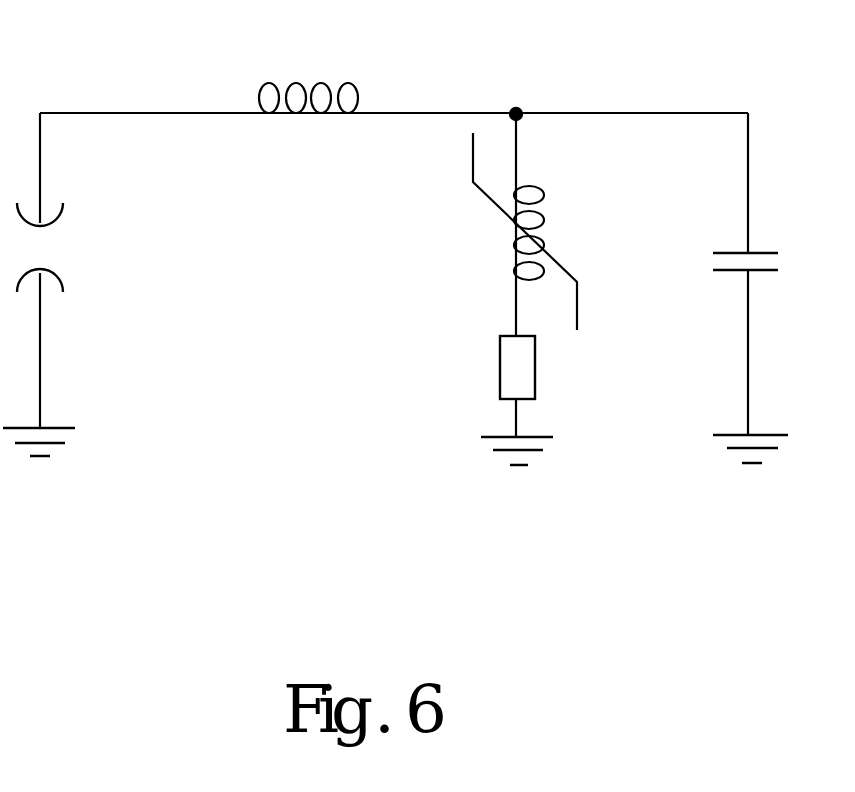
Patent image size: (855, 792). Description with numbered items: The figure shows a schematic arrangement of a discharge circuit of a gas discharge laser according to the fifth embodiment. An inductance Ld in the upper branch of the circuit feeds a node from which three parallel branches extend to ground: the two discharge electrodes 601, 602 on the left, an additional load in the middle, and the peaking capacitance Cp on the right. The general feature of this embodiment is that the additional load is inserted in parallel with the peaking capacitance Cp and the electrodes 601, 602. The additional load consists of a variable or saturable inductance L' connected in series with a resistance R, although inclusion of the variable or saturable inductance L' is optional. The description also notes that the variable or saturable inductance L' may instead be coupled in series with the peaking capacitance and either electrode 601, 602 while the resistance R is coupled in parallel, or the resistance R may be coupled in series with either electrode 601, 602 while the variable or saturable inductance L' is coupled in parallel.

The electrode 601 is at (76, 212).
The electrode 602 is at (74, 348).
The inductance Ld is at (309, 70).
The variable or saturable inductance L' is at (534, 231).
The resistance R is at (536, 367).
The peaking capacitance Cp is at (770, 272).